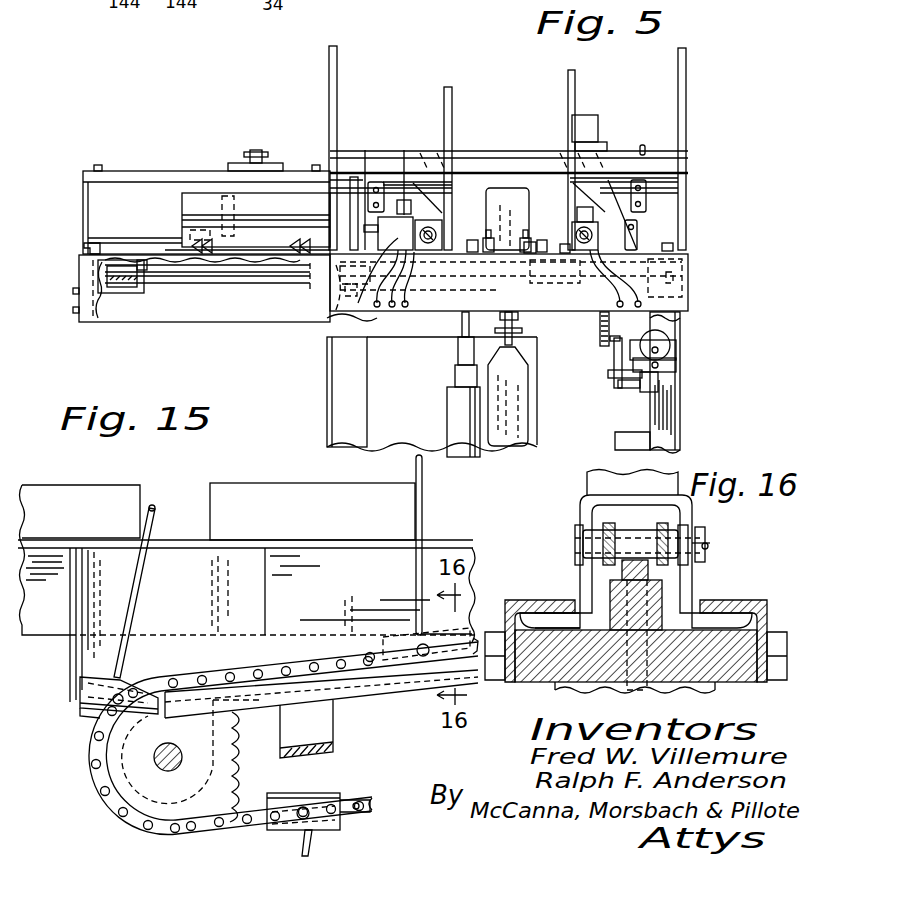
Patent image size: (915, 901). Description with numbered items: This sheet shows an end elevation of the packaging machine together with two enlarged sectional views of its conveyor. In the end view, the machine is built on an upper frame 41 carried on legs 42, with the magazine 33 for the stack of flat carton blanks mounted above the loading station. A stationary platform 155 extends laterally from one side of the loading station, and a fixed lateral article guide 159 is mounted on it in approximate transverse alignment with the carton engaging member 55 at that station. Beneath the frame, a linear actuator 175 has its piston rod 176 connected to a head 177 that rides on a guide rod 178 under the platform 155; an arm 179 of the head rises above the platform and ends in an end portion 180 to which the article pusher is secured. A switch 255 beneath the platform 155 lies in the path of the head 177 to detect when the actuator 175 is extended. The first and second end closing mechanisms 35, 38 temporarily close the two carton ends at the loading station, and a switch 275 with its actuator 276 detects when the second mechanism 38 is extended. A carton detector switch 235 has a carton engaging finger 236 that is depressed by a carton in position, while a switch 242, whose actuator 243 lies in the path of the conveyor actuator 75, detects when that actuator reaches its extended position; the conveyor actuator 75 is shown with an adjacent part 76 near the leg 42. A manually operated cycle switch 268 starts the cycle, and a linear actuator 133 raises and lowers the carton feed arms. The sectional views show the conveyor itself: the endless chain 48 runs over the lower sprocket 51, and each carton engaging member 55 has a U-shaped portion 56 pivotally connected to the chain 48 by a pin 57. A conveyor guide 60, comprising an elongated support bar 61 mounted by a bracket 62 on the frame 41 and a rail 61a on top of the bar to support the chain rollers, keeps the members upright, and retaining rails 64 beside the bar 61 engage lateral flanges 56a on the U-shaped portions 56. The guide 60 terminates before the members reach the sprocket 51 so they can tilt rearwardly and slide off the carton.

In FIG. 5, the magazine 33 is at (515, 160).
In FIG. 5, the first carton end closing mechanism 35 is at (576, 228).
In FIG. 5, the second end closing mechanism 38 is at (448, 238).
In FIG. 5, the upper frame 41 is at (690, 268).
In FIG. 5, the legs 42 is at (680, 400).
In FIG. 5, the endless chain 48 is at (513, 330).
In FIG. 15, the endless chain 48 is at (322, 668).
In FIG. 16, the endless chain 48 is at (610, 522).
In FIG. 15, the sprocket 51 is at (110, 770).
In FIG. 5, the carton engaging members 55 is at (528, 412).
In FIG. 15, the carton engaging members 55 is at (157, 515).
In FIG. 16, the carton engaging members 55 is at (590, 483).
In FIG. 15, the U-shaped portion 56 is at (80, 690).
In FIG. 16, the U-shaped portion 56 is at (582, 585).
In FIG. 15, the lateral flanges 56a is at (80, 714).
In FIG. 16, the lateral flanges 56a is at (553, 620).
In FIG. 15, the pin 57 is at (122, 694).
In FIG. 16, the pin 57 is at (710, 548).
In FIG. 15, the conveyor guide 60 is at (368, 680).
In FIG. 16, the conveyor guide 60 is at (530, 685).
In FIG. 16, the support bar 61 is at (735, 665).
In FIG. 16, the rail 61a is at (662, 590).
In FIG. 15, the bracket 62 is at (333, 730).
In FIG. 16, the retaining rails 64 is at (722, 602).
In FIG. 5, the conveyor actuator 75 is at (668, 340).
In FIG. 5, the bracket 76 is at (678, 372).
In FIG. 5, the linear actuator 133 is at (455, 410).
In FIG. 5, the stationary platform 155 is at (128, 252).
In FIG. 5, the fixed lateral article guide 159 is at (118, 190).
In FIG. 5, the linear actuator 175 is at (488, 282).
In FIG. 5, the piston rod 176 is at (200, 285).
In FIG. 5, the head 177 is at (120, 295).
In FIG. 5, the guide rod 178 is at (228, 285).
In FIG. 5, the arm 179 is at (86, 243).
In FIG. 5, the end portion 180 is at (108, 238).
In FIG. 5, the switch 235 is at (566, 258).
In FIG. 5, the carton engaging finger 236 is at (545, 258).
In FIG. 5, the switch 242 is at (640, 390).
In FIG. 5, the actuator 243 is at (614, 378).
In FIG. 5, the switch 255 is at (328, 325).
In FIG. 5, the cycle switch 268 is at (256, 150).
In FIG. 5, the switch 275 is at (381, 182).
In FIG. 5, the actuator 276 is at (406, 200).